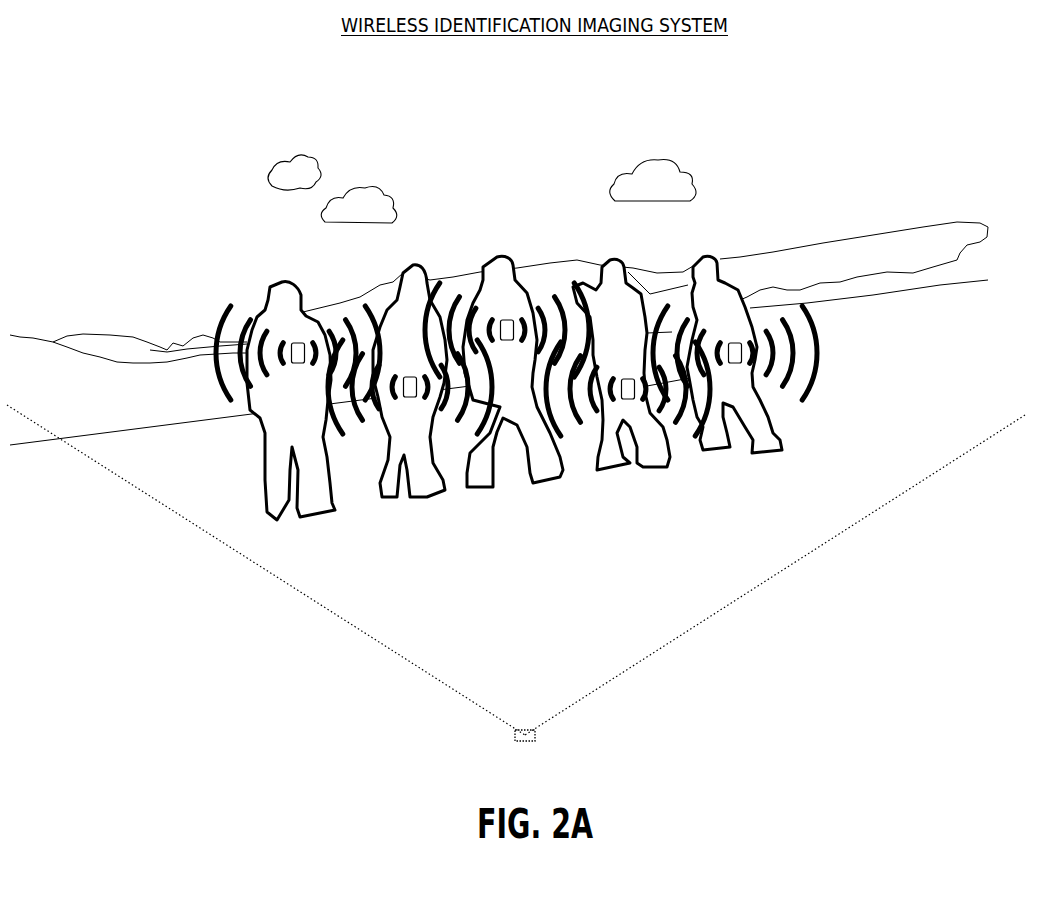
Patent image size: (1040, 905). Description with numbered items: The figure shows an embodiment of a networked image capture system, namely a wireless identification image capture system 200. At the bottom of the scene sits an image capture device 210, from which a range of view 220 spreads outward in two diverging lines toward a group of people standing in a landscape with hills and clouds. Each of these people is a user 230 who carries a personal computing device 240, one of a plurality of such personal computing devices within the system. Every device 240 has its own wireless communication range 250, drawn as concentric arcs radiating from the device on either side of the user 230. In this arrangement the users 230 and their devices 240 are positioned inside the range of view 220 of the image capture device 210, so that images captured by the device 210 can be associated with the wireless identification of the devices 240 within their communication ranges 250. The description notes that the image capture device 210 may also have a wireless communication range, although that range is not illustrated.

The wireless identification image capture system 200 is at (110, 165).
The image capture device 210 is at (527, 741).
The range of view 220 is at (590, 693).
The user 230 is at (702, 258).
The personal computing device 240 is at (740, 367).
The wireless communication range 250 is at (823, 344).